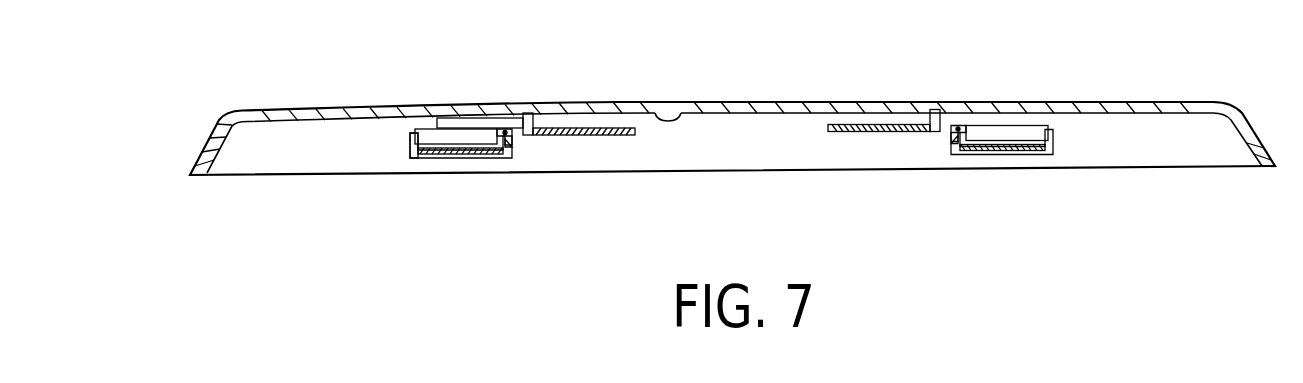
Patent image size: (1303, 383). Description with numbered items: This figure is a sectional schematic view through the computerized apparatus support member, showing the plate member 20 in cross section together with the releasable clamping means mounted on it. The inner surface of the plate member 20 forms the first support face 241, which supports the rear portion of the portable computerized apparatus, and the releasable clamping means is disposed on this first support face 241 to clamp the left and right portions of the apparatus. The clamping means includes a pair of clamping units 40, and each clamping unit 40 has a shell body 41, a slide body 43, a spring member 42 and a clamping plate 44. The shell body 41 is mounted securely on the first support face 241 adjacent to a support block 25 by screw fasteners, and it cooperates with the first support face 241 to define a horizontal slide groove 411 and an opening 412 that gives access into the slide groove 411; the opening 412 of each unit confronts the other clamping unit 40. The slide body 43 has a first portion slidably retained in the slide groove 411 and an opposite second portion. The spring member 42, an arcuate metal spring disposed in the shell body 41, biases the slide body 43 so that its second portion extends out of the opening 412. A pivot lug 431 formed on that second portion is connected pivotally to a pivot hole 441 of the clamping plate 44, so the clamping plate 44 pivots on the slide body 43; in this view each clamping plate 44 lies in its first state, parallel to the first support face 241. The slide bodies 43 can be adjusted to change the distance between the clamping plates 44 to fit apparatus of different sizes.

The plate member 20 is at (292, 105).
The first support face 241 is at (683, 118).
The support block 25 is at (470, 122).
The clamping unit 40 is at (402, 186).
The shell body 41 is at (432, 160).
The slide groove 411 is at (412, 148).
The opening 412 is at (480, 160).
The spring member 42 is at (430, 133).
The slide body 43 is at (500, 160).
The pivot lug 431 is at (522, 140).
The clamping plate 44 is at (600, 135).
The pivot hole 441 is at (530, 117).